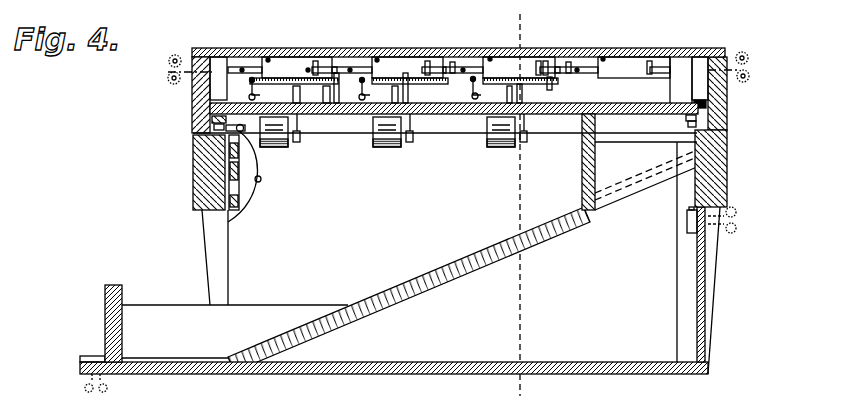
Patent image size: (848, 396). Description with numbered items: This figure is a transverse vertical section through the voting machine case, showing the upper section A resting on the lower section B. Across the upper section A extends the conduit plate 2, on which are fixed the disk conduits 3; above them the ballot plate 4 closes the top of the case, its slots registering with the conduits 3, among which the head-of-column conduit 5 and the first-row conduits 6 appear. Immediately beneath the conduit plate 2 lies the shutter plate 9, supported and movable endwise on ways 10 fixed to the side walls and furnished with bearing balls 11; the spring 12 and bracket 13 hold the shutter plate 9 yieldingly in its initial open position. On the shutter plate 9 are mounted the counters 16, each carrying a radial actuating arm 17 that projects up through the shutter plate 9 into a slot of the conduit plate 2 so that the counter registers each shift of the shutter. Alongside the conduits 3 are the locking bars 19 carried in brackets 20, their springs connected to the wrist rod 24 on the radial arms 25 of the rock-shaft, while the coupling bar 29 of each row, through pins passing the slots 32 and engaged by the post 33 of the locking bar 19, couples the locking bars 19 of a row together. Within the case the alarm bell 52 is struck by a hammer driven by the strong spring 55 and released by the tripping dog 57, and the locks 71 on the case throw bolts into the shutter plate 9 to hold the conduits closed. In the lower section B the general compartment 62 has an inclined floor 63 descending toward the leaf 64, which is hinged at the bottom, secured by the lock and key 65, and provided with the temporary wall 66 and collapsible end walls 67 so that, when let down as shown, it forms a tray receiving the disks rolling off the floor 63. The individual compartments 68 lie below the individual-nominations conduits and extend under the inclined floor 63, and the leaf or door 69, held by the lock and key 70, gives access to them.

The conduit plate 2 is at (618, 103).
The conduits 3 is at (300, 62).
The ballot plate 4 is at (693, 51).
The slot and conduit 5 is at (518, 198).
The slots and conduits 6 is at (192, 133).
The shutter plate 9 is at (450, 110).
The ways 10 is at (210, 121).
The bearing balls 11 is at (213, 120).
The spring 12 is at (243, 131).
The bracket 13 is at (212, 143).
The counters 16 is at (287, 147).
The radial actuating arm 17 is at (298, 124).
The locking bar 19 is at (453, 63).
The brackets 20 is at (422, 88).
The wrist rod 24 is at (393, 89).
The radial arms 25 is at (373, 97).
The coupling bar 29 is at (569, 64).
The slots 32 is at (320, 63).
The post 33 is at (427, 62).
The alarm bell 52 is at (258, 193).
The strong spring 55 is at (233, 221).
The tripping dog 57 is at (262, 179).
The general compartment 62 is at (378, 249).
The inclined floor 63 is at (442, 264).
The leaf portion 64 is at (158, 362).
The lock and key 65 is at (90, 358).
The ledge or temporary wall 66 is at (106, 292).
The collapsible end walls 67 is at (235, 275).
The individual compartments 68 is at (597, 238).
The leaf or door 69 is at (711, 258).
The lock and key 70 is at (687, 225).
The locks 71 is at (216, 68).
The upper section A is at (192, 88).
The lower section B is at (193, 170).